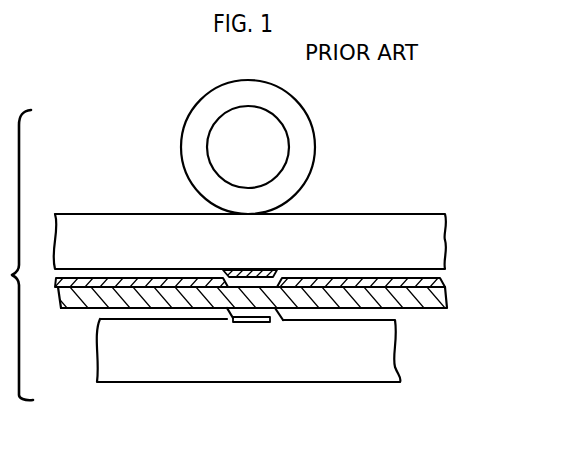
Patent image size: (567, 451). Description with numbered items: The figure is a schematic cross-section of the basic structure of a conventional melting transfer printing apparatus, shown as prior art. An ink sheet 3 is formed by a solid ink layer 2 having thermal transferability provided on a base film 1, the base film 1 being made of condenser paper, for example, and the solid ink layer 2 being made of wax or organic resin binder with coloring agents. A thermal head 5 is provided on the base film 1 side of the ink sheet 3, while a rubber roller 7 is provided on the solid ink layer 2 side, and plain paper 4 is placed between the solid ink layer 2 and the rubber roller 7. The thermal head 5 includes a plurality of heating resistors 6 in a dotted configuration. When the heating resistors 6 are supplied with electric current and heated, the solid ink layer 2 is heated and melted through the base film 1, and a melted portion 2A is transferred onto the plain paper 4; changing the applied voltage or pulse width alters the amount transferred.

The rubber roller 7 is at (309, 124).
The plain paper 4 is at (445, 240).
The melted portion 2A is at (233, 268).
The ink sheet 3 is at (279, 297).
The solid ink layer 2 is at (447, 283).
The base film 1 is at (483, 278).
The thermal head 5 is at (395, 367).
The heating resistors 6 is at (247, 323).